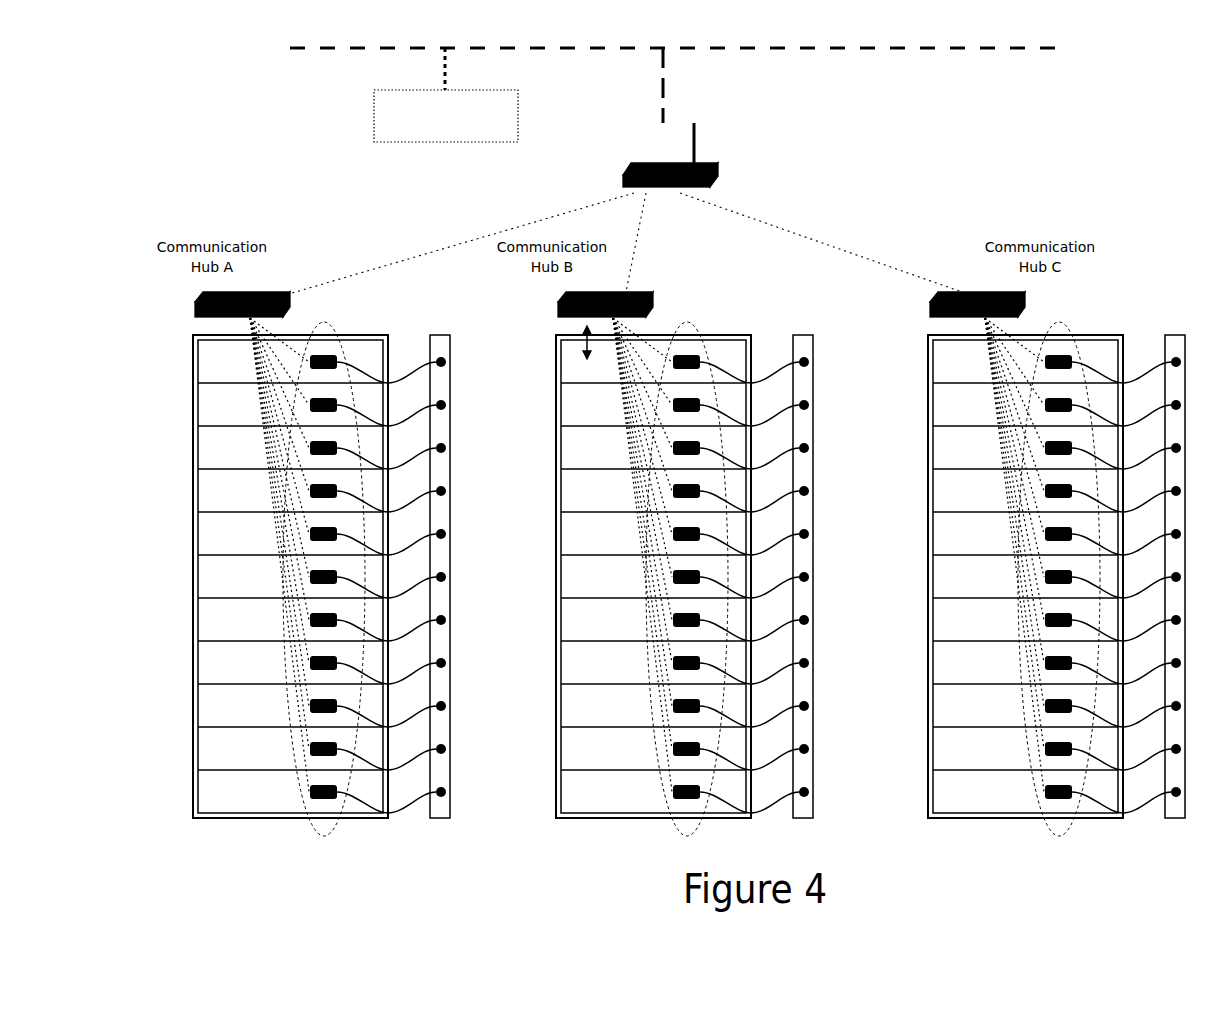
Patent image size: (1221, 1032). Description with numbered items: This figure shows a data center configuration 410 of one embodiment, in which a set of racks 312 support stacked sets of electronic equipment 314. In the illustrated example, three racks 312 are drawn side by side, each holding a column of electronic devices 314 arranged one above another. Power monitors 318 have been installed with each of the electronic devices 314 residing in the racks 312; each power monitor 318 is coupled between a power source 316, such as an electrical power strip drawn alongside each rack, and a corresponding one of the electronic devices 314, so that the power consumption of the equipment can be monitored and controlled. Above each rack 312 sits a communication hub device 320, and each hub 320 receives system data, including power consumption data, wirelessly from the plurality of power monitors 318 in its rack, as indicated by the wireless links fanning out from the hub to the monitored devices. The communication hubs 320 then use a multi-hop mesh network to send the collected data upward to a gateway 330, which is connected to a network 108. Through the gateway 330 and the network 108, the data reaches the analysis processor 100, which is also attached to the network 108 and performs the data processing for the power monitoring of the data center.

The analysis processor 100 is at (519, 117).
The network 108 is at (323, 55).
The data center configuration 410 is at (334, 150).
The gateway 330 is at (614, 157).
The communication hub device 320 is at (292, 299).
The power monitor 318 is at (330, 327).
The power source 316 is at (452, 335).
The electronic equipment 314 is at (658, 565).
The rack 312 is at (185, 833).